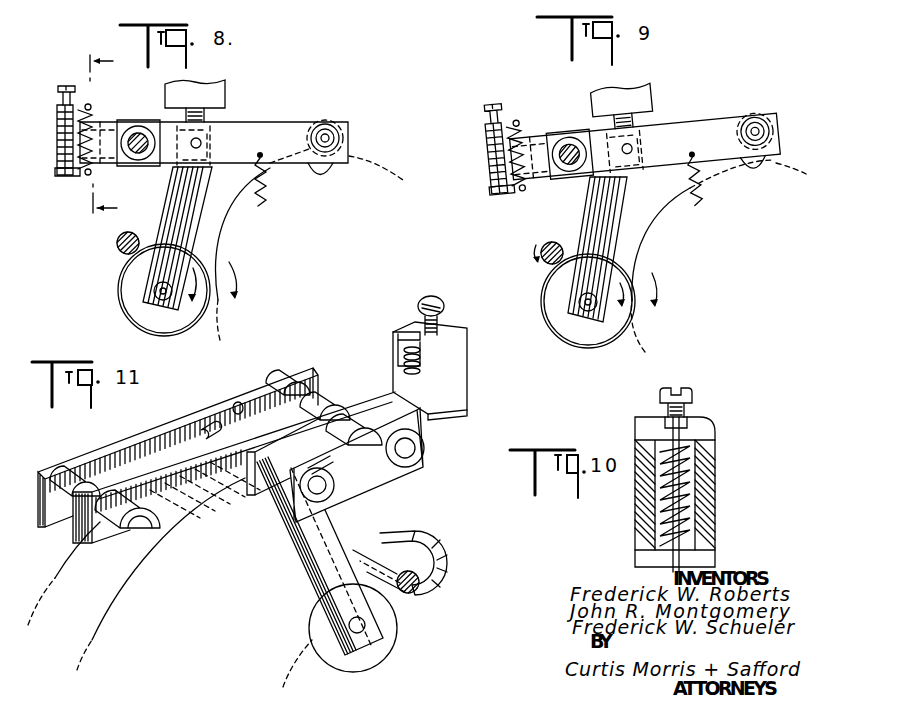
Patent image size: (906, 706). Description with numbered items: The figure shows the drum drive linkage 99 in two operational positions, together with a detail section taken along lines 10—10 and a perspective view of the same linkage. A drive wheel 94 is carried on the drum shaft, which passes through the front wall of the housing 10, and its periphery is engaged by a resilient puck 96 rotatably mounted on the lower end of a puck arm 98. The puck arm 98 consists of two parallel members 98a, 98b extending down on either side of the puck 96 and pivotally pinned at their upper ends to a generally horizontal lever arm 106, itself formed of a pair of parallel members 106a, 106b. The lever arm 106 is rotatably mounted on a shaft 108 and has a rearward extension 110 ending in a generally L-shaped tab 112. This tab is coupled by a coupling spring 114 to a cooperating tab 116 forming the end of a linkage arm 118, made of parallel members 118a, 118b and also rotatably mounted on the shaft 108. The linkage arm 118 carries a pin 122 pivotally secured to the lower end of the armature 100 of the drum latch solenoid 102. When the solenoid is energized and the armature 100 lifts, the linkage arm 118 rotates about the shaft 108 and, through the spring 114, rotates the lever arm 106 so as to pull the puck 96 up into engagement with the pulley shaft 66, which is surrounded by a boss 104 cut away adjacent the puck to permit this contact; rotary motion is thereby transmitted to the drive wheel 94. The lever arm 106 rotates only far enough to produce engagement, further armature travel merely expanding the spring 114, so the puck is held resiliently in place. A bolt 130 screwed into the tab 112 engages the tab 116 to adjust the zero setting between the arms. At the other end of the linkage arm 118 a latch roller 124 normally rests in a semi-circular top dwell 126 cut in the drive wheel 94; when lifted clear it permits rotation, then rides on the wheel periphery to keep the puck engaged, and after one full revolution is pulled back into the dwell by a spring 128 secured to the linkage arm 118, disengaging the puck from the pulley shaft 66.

In FIG. 8, the housing 10 is at (99, 136).
In FIG. 8, the pulley shaft 66 is at (118, 252).
In FIG. 9, the pulley shaft 66 is at (540, 260).
In FIG. 11, the pulley shaft 66 is at (411, 593).
In FIG. 8, the drive wheel 94 is at (377, 174).
In FIG. 9, the drive wheel 94 is at (641, 323).
In FIG. 11, the drive wheel 94 is at (291, 660).
In FIG. 8, the resilient puck 96 is at (130, 305).
In FIG. 9, the resilient puck 96 is at (566, 328).
In FIG. 11, the resilient puck 96 is at (380, 637).
In FIG. 8, the puck arm 98 is at (204, 194).
In FIG. 9, the puck arm 98 is at (630, 204).
In FIG. 11, the puck arm 98 is at (302, 538).
In FIG. 11, the parallel member of puck arm 98a is at (343, 553).
In FIG. 11, the parallel member of puck arm 98b is at (272, 518).
In FIG. 8, the drum drive linkage 99 is at (271, 102).
In FIG. 9, the drum drive linkage 99 is at (705, 102).
In FIG. 11, the drum drive linkage 99 is at (335, 354).
In FIG. 8, the solenoid armature 100 is at (206, 117).
In FIG. 9, the solenoid armature 100 is at (637, 130).
In FIG. 8, the drum latch solenoid 102 is at (196, 88).
In FIG. 9, the drum latch solenoid 102 is at (615, 95).
In FIG. 11, the boss 104 is at (431, 550).
In FIG. 8, the lever arm 106 is at (57, 165).
In FIG. 9, the lever arm 106 is at (480, 155).
In FIG. 11, the lever arm 106 is at (431, 466).
In FIG. 11, the parallel member of lever arm 106a is at (378, 473).
In FIG. 11, the parallel member of lever arm 106b is at (248, 490).
In FIG. 8, the shaft 108 is at (138, 160).
In FIG. 9, the shaft 108 is at (563, 172).
In FIG. 11, the shaft 108 is at (407, 452).
In FIG. 9, the rearward extension 110 is at (527, 135).
In FIG. 10, the rearward extension 110 is at (716, 470).
In FIG. 11, the rearward extension 110 is at (447, 387).
In FIG. 8, the L-shaped tab 112 is at (58, 104).
In FIG. 9, the L-shaped tab 112 is at (480, 116).
In FIG. 10, the L-shaped tab 112 is at (650, 420).
In FIG. 11, the L-shaped tab 112 is at (412, 330).
In FIG. 8, the coupling spring 114 is at (89, 117).
In FIG. 9, the coupling spring 114 is at (519, 130).
In FIG. 10, the coupling spring 114 is at (690, 508).
In FIG. 11, the coupling spring 114 is at (404, 368).
In FIG. 8, the cooperating tab 116 is at (78, 177).
In FIG. 9, the cooperating tab 116 is at (506, 193).
In FIG. 10, the cooperating tab 116 is at (640, 560).
In FIG. 11, the cooperating tab 116 is at (453, 414).
In FIG. 8, the linkage arm 118 is at (295, 167).
In FIG. 11, the linkage arm 118 is at (97, 443).
In FIG. 11, the parallel member of linkage arm 118a is at (76, 522).
In FIG. 11, the parallel member of linkage arm 118b is at (147, 438).
In FIG. 8, the pin 122 is at (213, 135).
In FIG. 9, the pin 122 is at (643, 141).
In FIG. 11, the pin 122 is at (213, 431).
In FIG. 8, the latch roller 124 is at (339, 124).
In FIG. 9, the latch roller 124 is at (768, 117).
In FIG. 11, the latch roller 124 is at (117, 517).
In FIG. 8, the top dwell 126 is at (320, 175).
In FIG. 9, the top dwell 126 is at (747, 176).
In FIG. 11, the top dwell 126 is at (148, 526).
In FIG. 8, the spring 128 is at (268, 190).
In FIG. 9, the spring 128 is at (692, 203).
In FIG. 8, the bolt 130 is at (64, 84).
In FIG. 9, the bolt 130 is at (488, 98).
In FIG. 10, the bolt 130 is at (690, 410).
In FIG. 11, the bolt 130 is at (435, 297).